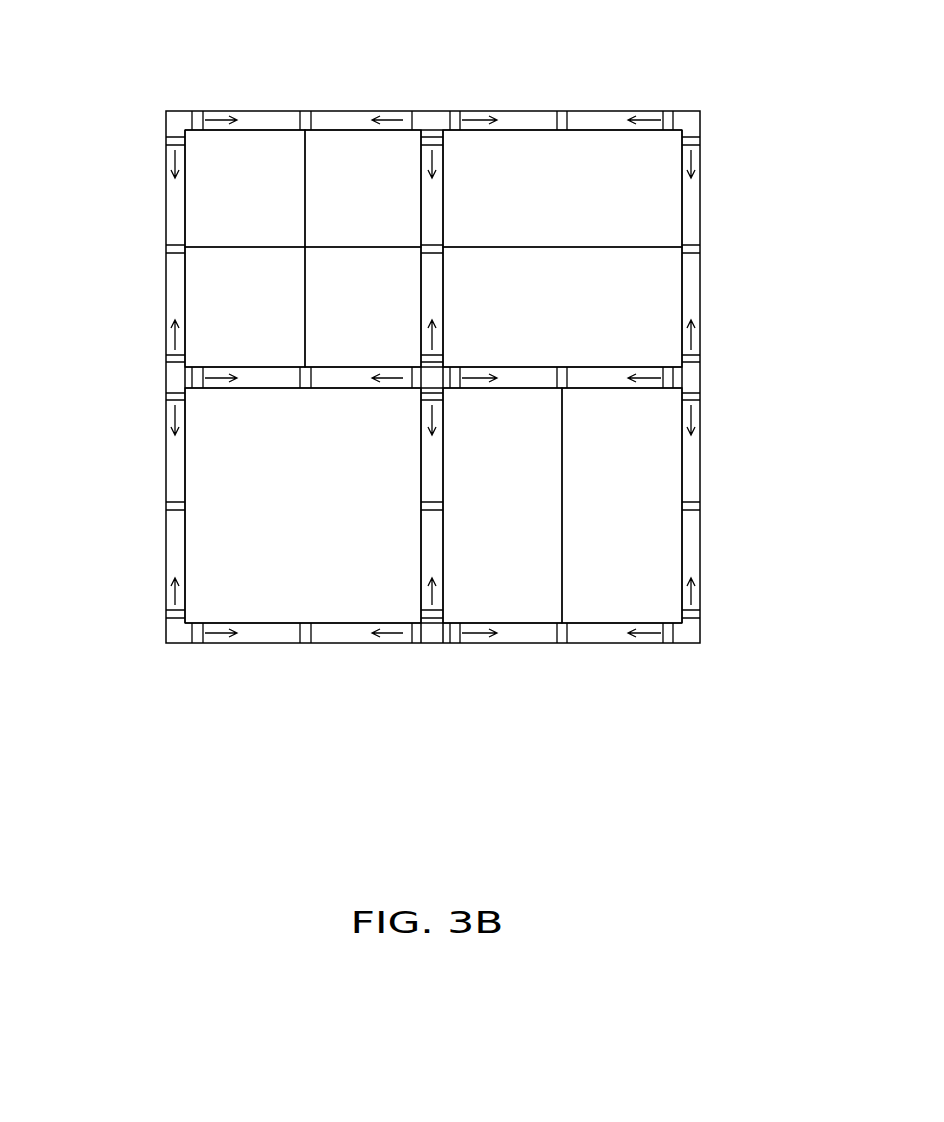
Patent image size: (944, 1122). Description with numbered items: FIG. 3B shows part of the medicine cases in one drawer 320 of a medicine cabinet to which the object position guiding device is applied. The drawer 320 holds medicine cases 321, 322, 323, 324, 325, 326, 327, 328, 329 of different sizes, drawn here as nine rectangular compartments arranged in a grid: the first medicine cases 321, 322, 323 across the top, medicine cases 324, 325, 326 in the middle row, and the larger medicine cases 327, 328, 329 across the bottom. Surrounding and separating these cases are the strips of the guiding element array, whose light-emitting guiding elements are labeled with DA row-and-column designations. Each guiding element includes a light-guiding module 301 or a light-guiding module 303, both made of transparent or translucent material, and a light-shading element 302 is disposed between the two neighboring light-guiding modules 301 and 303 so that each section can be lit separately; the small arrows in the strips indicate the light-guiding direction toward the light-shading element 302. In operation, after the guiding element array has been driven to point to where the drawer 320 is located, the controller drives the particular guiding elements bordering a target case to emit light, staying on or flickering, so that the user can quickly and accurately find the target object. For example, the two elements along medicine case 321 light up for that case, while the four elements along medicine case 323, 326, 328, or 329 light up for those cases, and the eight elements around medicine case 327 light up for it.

The light-guiding module 301 is at (263, 120).
The light-shading element 302 is at (305, 120).
The light-guiding module 303 is at (341, 120).
The drawer 320 is at (610, 789).
The medicine case 321 is at (268, 205).
The medicine case 322 is at (388, 205).
The medicine case 323 is at (588, 205).
The medicine case 324 is at (268, 321).
The medicine case 325 is at (388, 321).
The medicine case 326 is at (588, 321).
The medicine case 327 is at (330, 519).
The medicine case 328 is at (525, 519).
The medicine case 329 is at (646, 519).